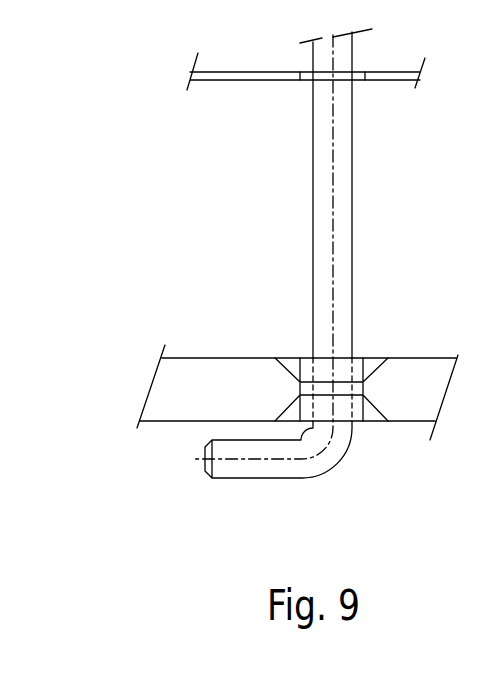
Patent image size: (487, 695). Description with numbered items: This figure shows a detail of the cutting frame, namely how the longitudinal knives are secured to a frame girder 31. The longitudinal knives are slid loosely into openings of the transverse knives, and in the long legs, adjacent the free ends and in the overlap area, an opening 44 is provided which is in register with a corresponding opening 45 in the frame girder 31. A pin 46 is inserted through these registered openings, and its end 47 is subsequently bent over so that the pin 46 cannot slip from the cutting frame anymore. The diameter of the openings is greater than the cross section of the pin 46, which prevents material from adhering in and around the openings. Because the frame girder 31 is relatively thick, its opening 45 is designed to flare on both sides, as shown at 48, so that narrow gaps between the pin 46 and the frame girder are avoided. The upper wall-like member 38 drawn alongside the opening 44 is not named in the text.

The upper plate 38 is at (392, 72).
The opening 44 is at (308, 77).
The pin 46 is at (348, 189).
The frame girder 31 is at (168, 377).
The opening 45 is at (287, 345).
The flare 48 is at (375, 460).
The end 47 is at (248, 468).